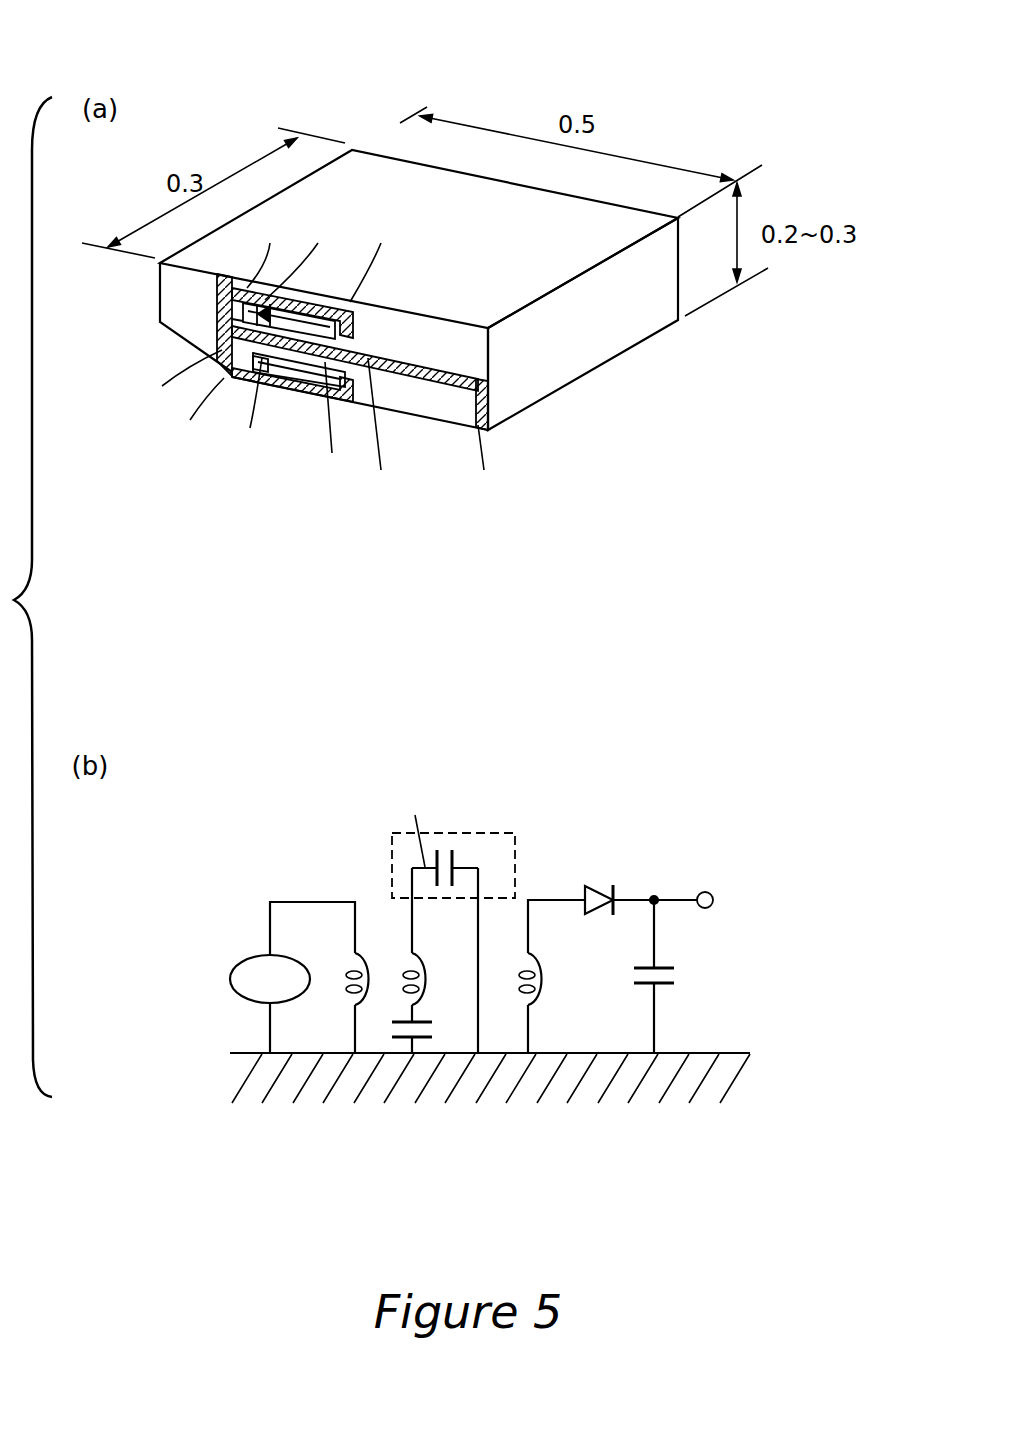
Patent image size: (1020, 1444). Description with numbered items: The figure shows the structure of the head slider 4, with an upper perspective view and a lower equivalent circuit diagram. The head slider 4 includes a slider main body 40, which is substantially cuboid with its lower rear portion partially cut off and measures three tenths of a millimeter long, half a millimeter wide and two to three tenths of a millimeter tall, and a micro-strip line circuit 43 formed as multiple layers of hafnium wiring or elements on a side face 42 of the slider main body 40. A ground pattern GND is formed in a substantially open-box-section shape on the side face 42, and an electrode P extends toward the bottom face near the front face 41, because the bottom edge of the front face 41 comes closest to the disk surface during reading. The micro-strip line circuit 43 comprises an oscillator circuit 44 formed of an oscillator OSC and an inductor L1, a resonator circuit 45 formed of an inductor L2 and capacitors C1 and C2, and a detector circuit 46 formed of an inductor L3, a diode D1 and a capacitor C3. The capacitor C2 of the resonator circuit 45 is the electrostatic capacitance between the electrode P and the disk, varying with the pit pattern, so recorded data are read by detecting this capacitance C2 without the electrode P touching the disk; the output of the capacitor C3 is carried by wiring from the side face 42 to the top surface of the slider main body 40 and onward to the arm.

The head slider 4 is at (413, 303).
The slider main body 40 is at (622, 205).
The front face 41 is at (618, 330).
The side face 42 is at (414, 402).
The micro-strip line circuit 43 is at (263, 480).
The oscillator circuit 44 is at (299, 900).
The resonator circuit 45 is at (453, 876).
The detector circuit 46 is at (617, 885).
The capacitor C1 is at (430, 1026).
The capacitor C2 is at (458, 862).
The capacitor C3 is at (675, 976).
The diode D1 is at (602, 885).
The inductor L1 is at (344, 975).
The inductor L2 is at (427, 945).
The inductor L3 is at (550, 979).
The electrode P is at (415, 826).
The oscillator OSC is at (270, 979).
The ground pattern GND is at (486, 1125).